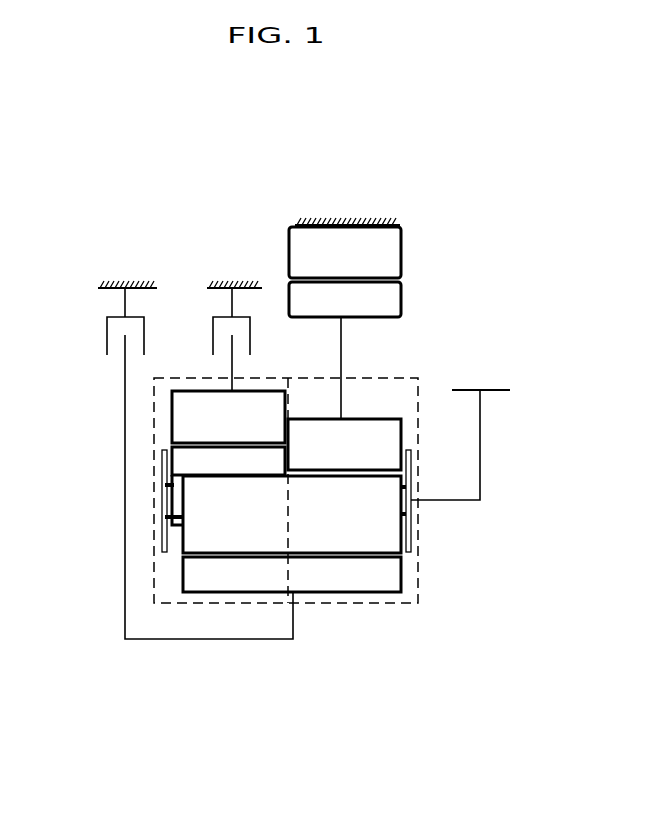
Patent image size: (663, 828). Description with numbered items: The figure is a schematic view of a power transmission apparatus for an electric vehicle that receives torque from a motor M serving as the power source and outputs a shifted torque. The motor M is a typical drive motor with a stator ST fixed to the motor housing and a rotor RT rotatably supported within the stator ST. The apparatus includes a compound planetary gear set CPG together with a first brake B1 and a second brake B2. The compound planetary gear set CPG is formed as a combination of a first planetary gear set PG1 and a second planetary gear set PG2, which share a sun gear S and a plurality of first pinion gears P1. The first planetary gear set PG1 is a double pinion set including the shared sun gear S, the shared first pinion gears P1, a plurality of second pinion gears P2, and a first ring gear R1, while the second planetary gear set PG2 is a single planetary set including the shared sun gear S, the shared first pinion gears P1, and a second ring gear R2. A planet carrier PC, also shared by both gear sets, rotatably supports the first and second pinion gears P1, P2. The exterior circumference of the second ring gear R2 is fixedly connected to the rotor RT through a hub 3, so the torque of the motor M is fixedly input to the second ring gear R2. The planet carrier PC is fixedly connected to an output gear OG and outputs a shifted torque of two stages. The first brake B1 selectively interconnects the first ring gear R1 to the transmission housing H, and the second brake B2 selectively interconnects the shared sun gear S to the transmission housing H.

The motor M is at (363, 272).
The stator ST is at (345, 252).
The rotor RT is at (345, 299).
The transmission housing H is at (360, 220).
The hub 3 is at (341, 351).
The first brake B1 is at (213, 328).
The second brake B2 is at (107, 326).
The compound planetary gear set CPG is at (286, 573).
The first planetary gear set PG1 is at (225, 556).
The second planetary gear set PG2 is at (292, 577).
The first ring gear R1 is at (228, 417).
The second ring gear R2 is at (344, 444).
The first pinion gears P1 is at (292, 514).
The second pinion gears P2 is at (223, 499).
The sun gear S is at (343, 605).
The planet carrier PC is at (457, 502).
The output gear OG is at (493, 389).